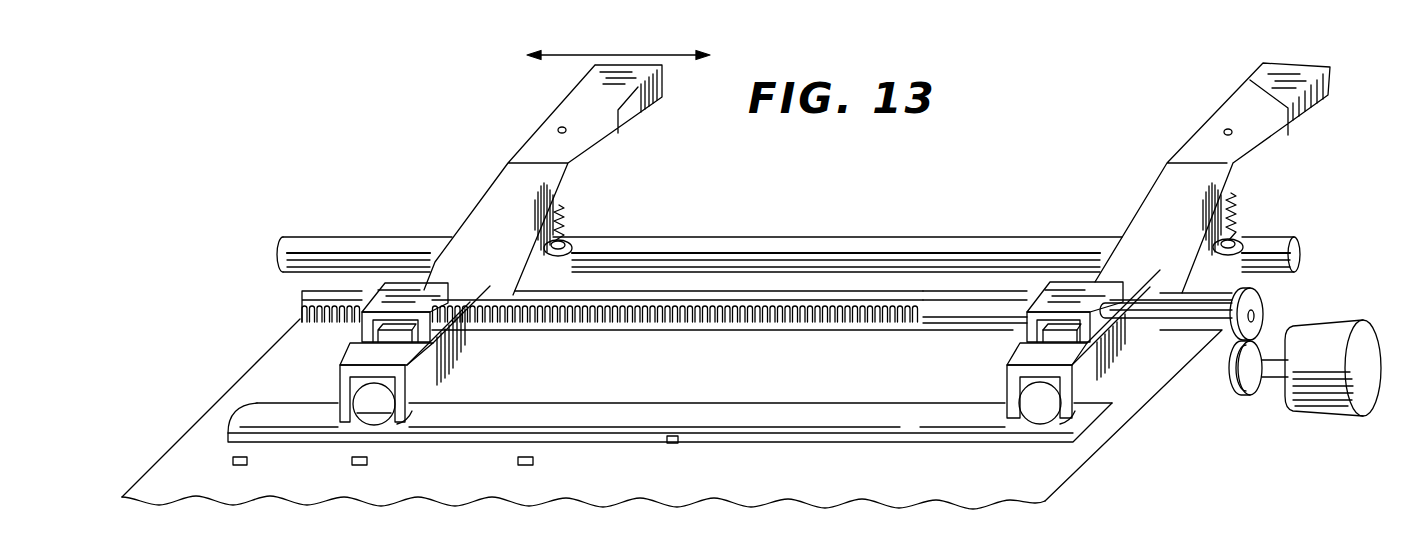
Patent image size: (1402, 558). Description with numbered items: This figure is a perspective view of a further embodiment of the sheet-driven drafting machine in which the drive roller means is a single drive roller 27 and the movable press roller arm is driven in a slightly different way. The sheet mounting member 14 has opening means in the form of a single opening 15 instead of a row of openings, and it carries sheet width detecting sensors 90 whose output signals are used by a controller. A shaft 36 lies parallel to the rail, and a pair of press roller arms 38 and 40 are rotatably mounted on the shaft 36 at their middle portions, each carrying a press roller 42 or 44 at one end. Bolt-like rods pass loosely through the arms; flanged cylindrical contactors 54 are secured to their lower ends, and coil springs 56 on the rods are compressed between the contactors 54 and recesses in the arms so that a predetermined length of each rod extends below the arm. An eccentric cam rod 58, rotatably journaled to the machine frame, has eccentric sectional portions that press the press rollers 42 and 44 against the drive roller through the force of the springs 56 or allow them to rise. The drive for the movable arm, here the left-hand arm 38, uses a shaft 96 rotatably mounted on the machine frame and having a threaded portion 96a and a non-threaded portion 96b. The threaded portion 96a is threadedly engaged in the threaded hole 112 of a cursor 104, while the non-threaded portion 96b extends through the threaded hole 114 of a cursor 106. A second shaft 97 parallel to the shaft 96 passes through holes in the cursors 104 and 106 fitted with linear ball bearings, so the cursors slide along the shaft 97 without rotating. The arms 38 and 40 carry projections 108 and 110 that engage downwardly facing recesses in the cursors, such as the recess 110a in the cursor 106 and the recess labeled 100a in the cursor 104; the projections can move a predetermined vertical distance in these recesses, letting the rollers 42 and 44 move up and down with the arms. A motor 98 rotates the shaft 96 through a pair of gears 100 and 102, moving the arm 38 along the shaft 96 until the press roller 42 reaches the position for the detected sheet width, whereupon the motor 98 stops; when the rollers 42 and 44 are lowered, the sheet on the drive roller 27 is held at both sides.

The sheet mounting member 14 is at (897, 468).
The single opening 15 is at (672, 444).
The single drive roller 27 is at (500, 412).
The shaft 36 is at (307, 297).
The first press roller arm 38 is at (526, 152).
The second press roller arm 40 is at (1158, 190).
The press roller 42 is at (390, 418).
The press roller 44 is at (1040, 426).
The contactor 54 is at (577, 241).
The coil spring 56 is at (562, 209).
The eccentric cam rod 58 is at (877, 240).
The sheet width detecting sensor 90 is at (236, 467).
The shaft 96 is at (745, 313).
The threaded portion 96a is at (683, 318).
The non-threaded portion 96b is at (950, 316).
The shaft 97 is at (984, 307).
The motor 98 is at (1313, 389).
The gear 100 is at (1245, 393).
The left pawl 100a is at (378, 333).
The gear 102 is at (1262, 307).
The cursor 104 is at (401, 293).
The cursor 106 is at (1077, 284).
The projection 108 is at (387, 342).
The projection 110 is at (1027, 344).
The recess 110a is at (1030, 339).
The threaded hole 112 is at (424, 292).
The threaded hole 114 is at (1102, 322).